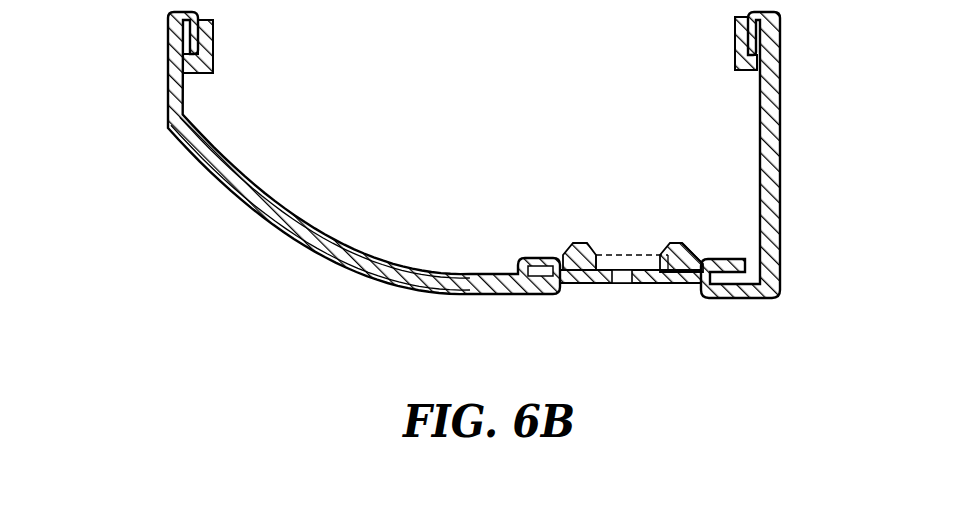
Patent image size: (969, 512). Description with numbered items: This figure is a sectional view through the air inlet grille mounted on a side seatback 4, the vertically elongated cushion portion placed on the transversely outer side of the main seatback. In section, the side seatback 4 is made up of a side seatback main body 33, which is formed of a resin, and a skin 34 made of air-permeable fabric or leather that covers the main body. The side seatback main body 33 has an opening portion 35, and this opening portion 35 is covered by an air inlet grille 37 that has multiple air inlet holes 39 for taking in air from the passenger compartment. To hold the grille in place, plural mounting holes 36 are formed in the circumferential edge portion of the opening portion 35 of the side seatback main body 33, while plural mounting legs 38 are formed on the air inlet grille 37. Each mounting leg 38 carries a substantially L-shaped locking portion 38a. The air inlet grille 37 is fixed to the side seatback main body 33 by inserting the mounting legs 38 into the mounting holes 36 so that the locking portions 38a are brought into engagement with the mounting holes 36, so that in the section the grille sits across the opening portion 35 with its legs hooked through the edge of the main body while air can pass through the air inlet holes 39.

The side seatback 4 is at (276, 234).
The side seatback main body 33 is at (212, 163).
The skin 34 is at (242, 198).
The opening portion 35 is at (625, 254).
The mounting holes 36 is at (588, 243).
The air inlet grille 37 is at (696, 285).
The mounting legs 38 is at (666, 245).
The locking portions 38a is at (695, 250).
The air inlet holes 39 is at (622, 285).